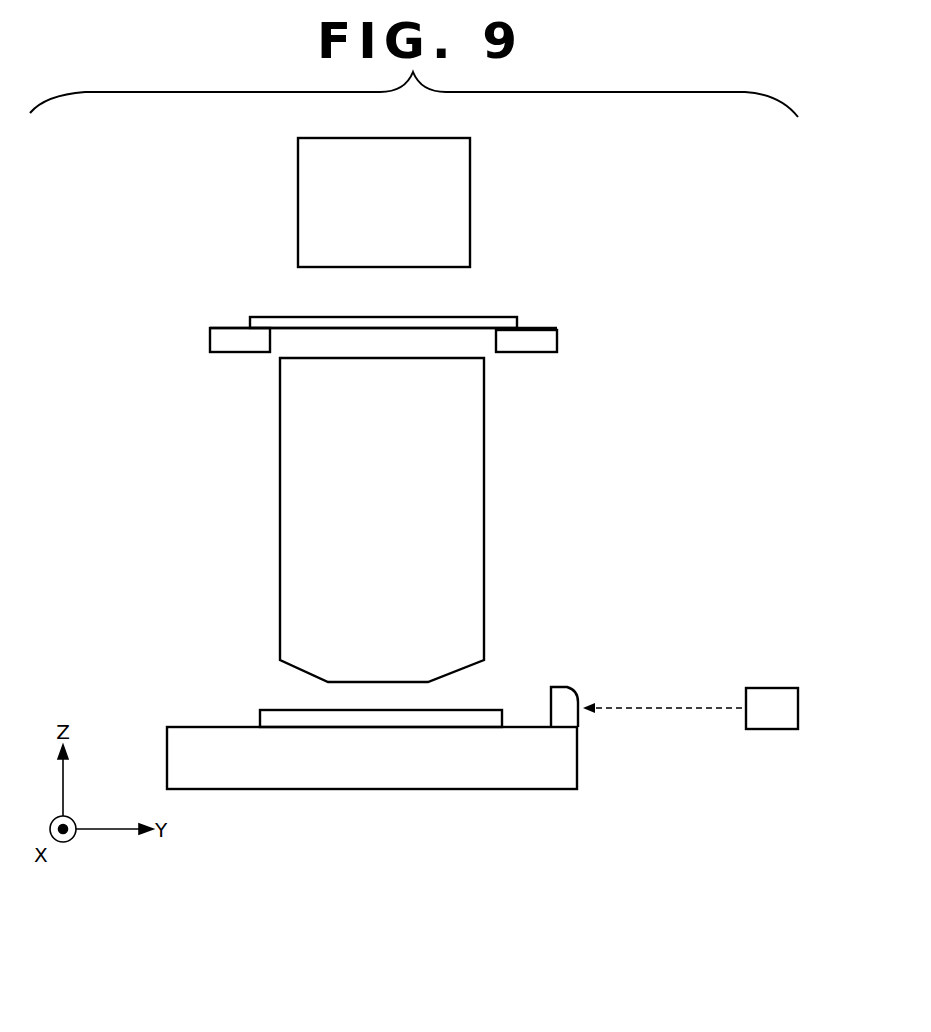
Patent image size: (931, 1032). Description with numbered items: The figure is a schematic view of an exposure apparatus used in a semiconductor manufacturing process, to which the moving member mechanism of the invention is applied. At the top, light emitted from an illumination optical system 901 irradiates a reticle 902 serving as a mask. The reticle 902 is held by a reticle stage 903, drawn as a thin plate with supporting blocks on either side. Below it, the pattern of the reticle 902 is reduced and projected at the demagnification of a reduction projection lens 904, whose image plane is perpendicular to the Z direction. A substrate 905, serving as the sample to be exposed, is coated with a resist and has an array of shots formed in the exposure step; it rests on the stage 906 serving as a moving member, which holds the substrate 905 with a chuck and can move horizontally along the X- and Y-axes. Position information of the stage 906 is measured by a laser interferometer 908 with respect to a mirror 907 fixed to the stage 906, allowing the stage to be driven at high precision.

The illumination optical system 901 is at (470, 204).
The reticle 902 is at (270, 317).
The reticle stage 903 is at (240, 352).
The reduction projection lens 904 is at (280, 534).
The substrate 905 is at (483, 717).
The wafer stage 906 is at (527, 790).
The mirror 907 is at (572, 688).
The laser interferometer 908 is at (773, 688).